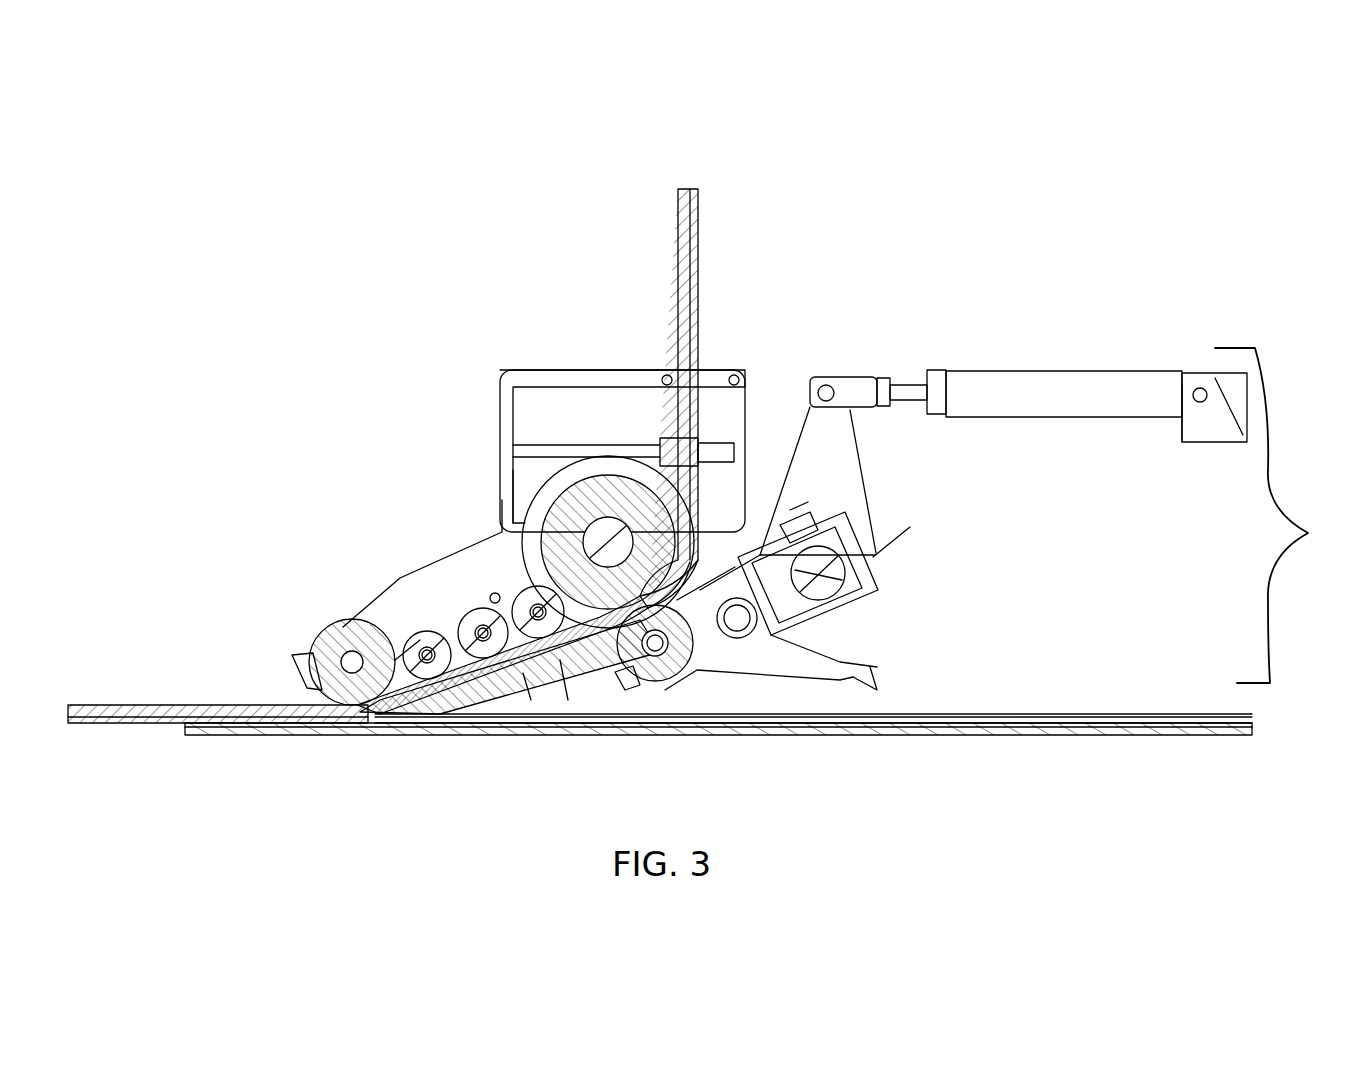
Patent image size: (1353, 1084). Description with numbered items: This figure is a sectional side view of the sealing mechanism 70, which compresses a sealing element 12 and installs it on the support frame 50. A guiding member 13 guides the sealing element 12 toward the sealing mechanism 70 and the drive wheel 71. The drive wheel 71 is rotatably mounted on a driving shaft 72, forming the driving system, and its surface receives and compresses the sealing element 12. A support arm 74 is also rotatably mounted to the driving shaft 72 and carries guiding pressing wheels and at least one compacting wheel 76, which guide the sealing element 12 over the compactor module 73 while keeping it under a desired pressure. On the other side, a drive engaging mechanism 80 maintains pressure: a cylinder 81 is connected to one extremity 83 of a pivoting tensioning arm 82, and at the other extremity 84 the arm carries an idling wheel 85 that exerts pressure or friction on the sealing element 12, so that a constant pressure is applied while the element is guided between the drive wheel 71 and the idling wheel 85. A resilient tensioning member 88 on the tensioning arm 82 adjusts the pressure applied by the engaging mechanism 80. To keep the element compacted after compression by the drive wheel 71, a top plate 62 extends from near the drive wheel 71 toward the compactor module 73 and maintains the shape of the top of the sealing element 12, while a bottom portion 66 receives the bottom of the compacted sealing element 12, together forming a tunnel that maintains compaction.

The sealing mechanism 70 is at (426, 236).
The sealing element 12 is at (708, 184).
The guiding member 13 is at (722, 432).
The extremity of pivoting tensioning arm 83 is at (832, 392).
The cylinder 81 is at (968, 372).
The drive engaging mechanism 80 is at (1276, 515).
The drive wheel 71 is at (556, 500).
The driving shaft 72 is at (604, 540).
The support arm 74 is at (443, 592).
The compactor module 73 is at (462, 657).
The compacting wheel 76 is at (327, 655).
The pivoting tensioning arm 82 is at (910, 527).
The resilient tensioning member 88 is at (850, 636).
The idling wheel 85 is at (626, 670).
The extremity of pivoting tensioning arm 84 is at (661, 647).
The support frame 50 is at (632, 738).
The bottom portion 66 is at (524, 667).
The top plate 62 is at (581, 648).